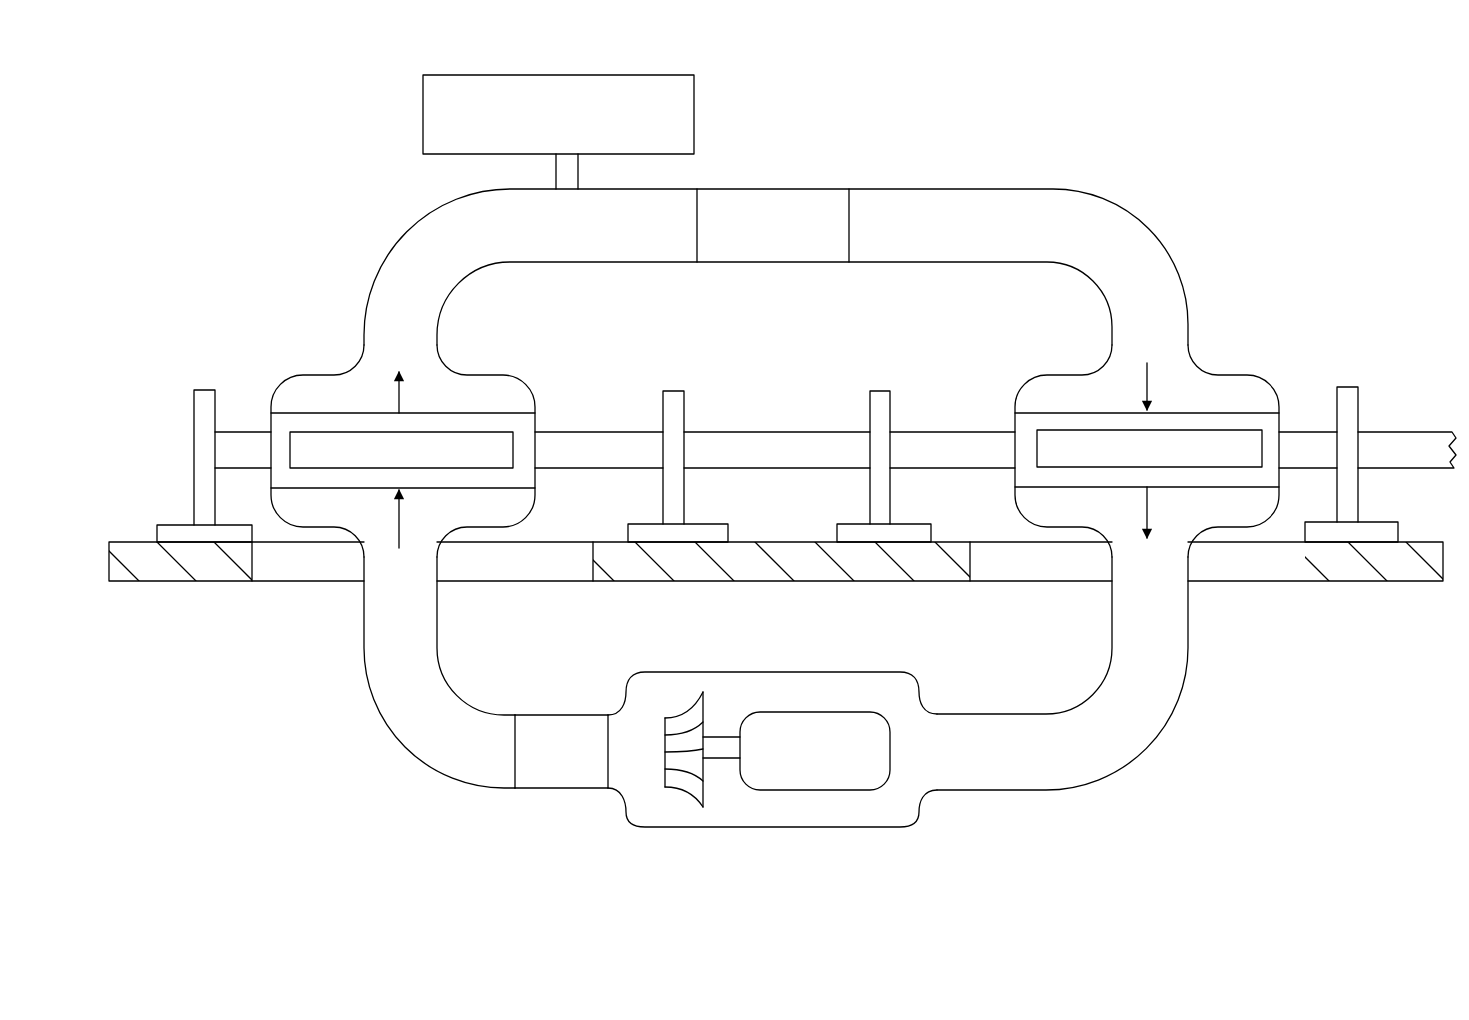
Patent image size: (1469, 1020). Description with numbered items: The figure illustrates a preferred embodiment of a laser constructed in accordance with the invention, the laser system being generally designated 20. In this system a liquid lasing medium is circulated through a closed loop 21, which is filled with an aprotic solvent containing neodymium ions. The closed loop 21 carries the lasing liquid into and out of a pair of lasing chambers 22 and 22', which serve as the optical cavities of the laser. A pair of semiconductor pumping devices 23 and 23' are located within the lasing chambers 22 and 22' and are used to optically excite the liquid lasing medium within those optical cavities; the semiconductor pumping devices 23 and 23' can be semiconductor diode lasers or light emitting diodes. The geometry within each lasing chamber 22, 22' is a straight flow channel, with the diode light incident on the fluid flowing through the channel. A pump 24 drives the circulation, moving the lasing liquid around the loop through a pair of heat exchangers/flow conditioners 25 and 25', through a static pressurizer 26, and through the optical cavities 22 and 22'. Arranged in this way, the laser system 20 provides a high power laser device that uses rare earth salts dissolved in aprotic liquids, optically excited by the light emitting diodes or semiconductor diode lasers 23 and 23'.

The laser system 20 is at (1172, 187).
The closed loop 21 is at (383, 261).
The lasing chamber 22 is at (396, 492).
The lasing chamber 22' is at (1133, 495).
The semiconductor pumping device 23 is at (427, 401).
The semiconductor pumping device 23' is at (1166, 391).
The pump 24 is at (830, 765).
The heat exchanger/flow conditioner 25 is at (561, 751).
The heat exchanger/flow conditioner 25' is at (773, 225).
The static pressurizer 26 is at (695, 120).